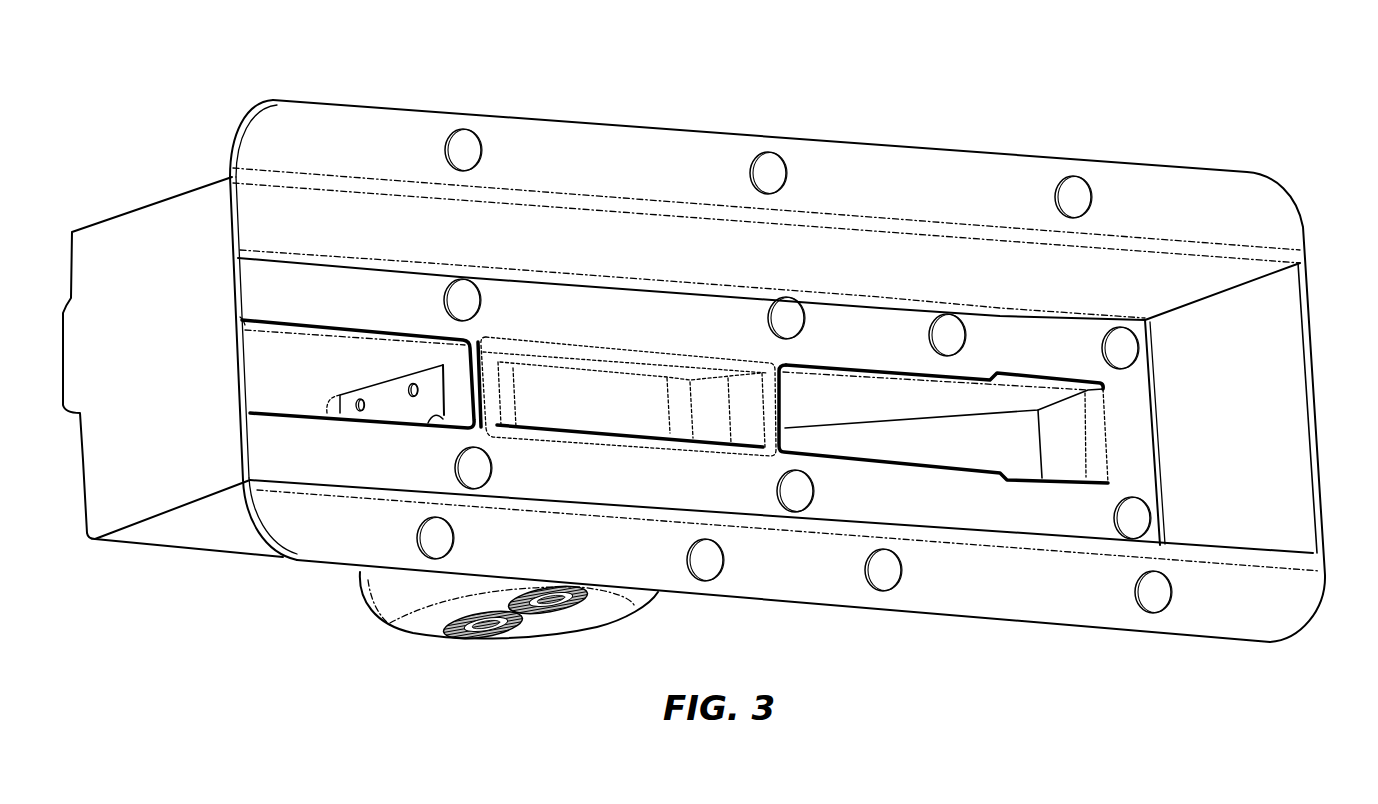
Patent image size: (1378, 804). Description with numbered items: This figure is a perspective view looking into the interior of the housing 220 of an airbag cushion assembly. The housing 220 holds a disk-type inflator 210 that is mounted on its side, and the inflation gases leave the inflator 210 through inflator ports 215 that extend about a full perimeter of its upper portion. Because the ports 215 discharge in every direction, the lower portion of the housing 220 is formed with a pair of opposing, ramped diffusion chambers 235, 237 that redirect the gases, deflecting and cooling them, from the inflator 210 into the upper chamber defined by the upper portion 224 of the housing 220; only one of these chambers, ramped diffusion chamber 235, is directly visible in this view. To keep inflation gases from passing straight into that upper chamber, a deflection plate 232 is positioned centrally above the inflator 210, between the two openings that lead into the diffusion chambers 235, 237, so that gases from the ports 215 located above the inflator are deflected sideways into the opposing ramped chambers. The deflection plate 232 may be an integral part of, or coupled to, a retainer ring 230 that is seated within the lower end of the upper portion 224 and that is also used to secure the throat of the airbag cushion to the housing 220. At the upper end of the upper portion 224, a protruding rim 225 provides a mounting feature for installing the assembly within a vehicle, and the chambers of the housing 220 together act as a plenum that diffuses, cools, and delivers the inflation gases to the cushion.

The inflator 210 is at (420, 623).
The inflator ports 215 is at (362, 403).
The housing 220 is at (185, 178).
The upper portion 224 is at (1280, 382).
The protruding rim 225 is at (562, 145).
The retainer ring 230 is at (713, 318).
The deflection plate 232 is at (628, 398).
The ramped diffusion chamber 235 is at (897, 410).
The ramped diffusion chamber 237 is at (284, 362).